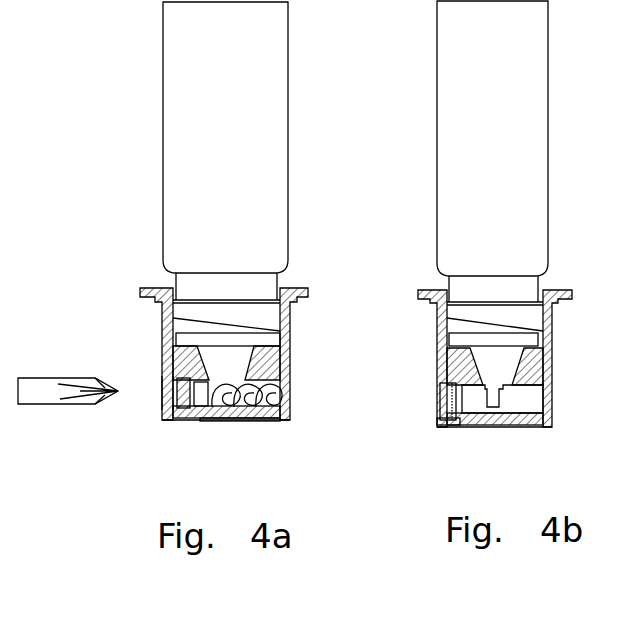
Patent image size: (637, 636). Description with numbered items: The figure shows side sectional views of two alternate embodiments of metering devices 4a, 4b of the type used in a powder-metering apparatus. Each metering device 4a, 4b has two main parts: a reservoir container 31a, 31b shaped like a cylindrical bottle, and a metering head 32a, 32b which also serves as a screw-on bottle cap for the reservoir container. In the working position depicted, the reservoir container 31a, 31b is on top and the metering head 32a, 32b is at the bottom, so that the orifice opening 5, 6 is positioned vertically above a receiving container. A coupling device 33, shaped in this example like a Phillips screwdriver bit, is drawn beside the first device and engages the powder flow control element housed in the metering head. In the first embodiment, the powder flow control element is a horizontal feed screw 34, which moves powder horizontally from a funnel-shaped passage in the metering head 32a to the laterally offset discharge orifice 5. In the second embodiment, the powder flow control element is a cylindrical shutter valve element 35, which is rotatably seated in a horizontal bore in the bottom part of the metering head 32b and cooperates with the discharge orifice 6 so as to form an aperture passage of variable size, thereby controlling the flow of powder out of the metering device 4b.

In FIG. 4a, the metering device 4a is at (145, 83).
In FIG. 4a, the reservoir container 31a is at (215, 183).
In FIG. 4a, the metering head 32a is at (268, 366).
In FIG. 4a, the coupling device 33 is at (55, 393).
In FIG. 4a, the horizontal feed screw 34 is at (272, 390).
In FIG. 4a, the discharge orifice 5 is at (258, 413).
In FIG. 4b, the metering device 4b is at (420, 83).
In FIG. 4b, the reservoir container 31b is at (480, 183).
In FIG. 4b, the metering head 32b is at (535, 365).
In FIG. 4b, the cylindrical shutter valve element 35 is at (518, 398).
In FIG. 4b, the discharge orifice 6 is at (548, 418).